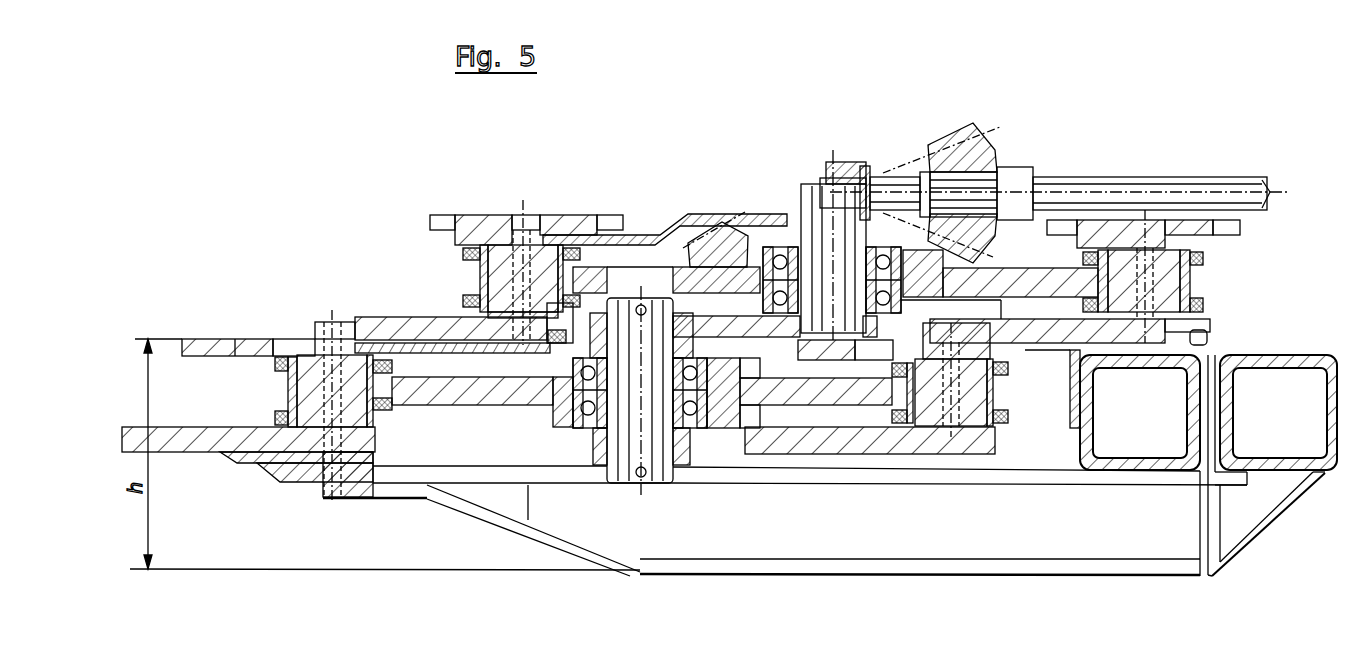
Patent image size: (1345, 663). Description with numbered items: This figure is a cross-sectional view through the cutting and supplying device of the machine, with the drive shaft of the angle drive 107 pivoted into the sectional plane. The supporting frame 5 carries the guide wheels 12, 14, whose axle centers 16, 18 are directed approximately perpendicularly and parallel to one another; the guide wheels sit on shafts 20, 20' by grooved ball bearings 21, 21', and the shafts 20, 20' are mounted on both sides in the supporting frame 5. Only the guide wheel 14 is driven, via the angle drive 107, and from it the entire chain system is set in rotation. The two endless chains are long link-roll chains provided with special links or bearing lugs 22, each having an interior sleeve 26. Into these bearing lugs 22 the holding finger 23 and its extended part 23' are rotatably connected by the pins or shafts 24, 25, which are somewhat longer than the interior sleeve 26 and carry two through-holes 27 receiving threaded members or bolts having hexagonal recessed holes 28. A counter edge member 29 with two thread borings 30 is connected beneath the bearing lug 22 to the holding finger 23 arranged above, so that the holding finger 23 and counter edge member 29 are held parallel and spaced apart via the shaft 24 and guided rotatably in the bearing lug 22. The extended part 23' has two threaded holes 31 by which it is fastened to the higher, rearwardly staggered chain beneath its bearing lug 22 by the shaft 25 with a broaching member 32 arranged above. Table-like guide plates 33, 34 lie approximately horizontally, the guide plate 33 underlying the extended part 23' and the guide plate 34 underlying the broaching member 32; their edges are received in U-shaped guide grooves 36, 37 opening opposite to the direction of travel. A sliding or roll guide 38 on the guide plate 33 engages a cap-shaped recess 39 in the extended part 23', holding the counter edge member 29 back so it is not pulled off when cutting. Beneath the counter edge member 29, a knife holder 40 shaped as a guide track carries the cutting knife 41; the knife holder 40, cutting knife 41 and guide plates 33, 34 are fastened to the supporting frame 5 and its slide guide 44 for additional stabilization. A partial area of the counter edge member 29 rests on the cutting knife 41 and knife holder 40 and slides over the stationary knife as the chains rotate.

The supporting frame 5 is at (1193, 408).
The guide wheel 12 is at (447, 390).
The guide wheel 14 is at (1002, 283).
The axle center 16 is at (645, 453).
The axle center 18 is at (836, 268).
The shaft 20 is at (634, 403).
The shaft 20' is at (811, 241).
The grooved ball bearing 21 is at (740, 381).
The grooved ball bearing 21' is at (857, 405).
The special link or bearing lug 22 is at (583, 263).
The holding finger 23 is at (537, 319).
The extended part of the holding finger 23' is at (616, 302).
The pin or shaft 24 is at (313, 387).
The pin or shaft 25 is at (503, 273).
The interior sleeve 26 is at (509, 245).
The through-hole 27 is at (388, 418).
The threaded member or bolt having hexagonal recessed hole 28 is at (345, 400).
The counter edge member 29 is at (180, 462).
The thread boring 30 is at (353, 445).
The threaded hole 31 is at (510, 330).
The broaching member 32 is at (477, 225).
The guide plate 33 is at (458, 348).
The guide plate 34 is at (617, 237).
The guide groove 36 is at (350, 320).
The guide groove 37 is at (557, 220).
The sliding and/or roll guide 38 is at (560, 345).
The cap-shaped recess 39 is at (549, 301).
The knife holder 40 is at (298, 478).
The cutting knife 41 is at (238, 462).
The slide guide 44 is at (1148, 527).
The angle drive 107 is at (897, 143).